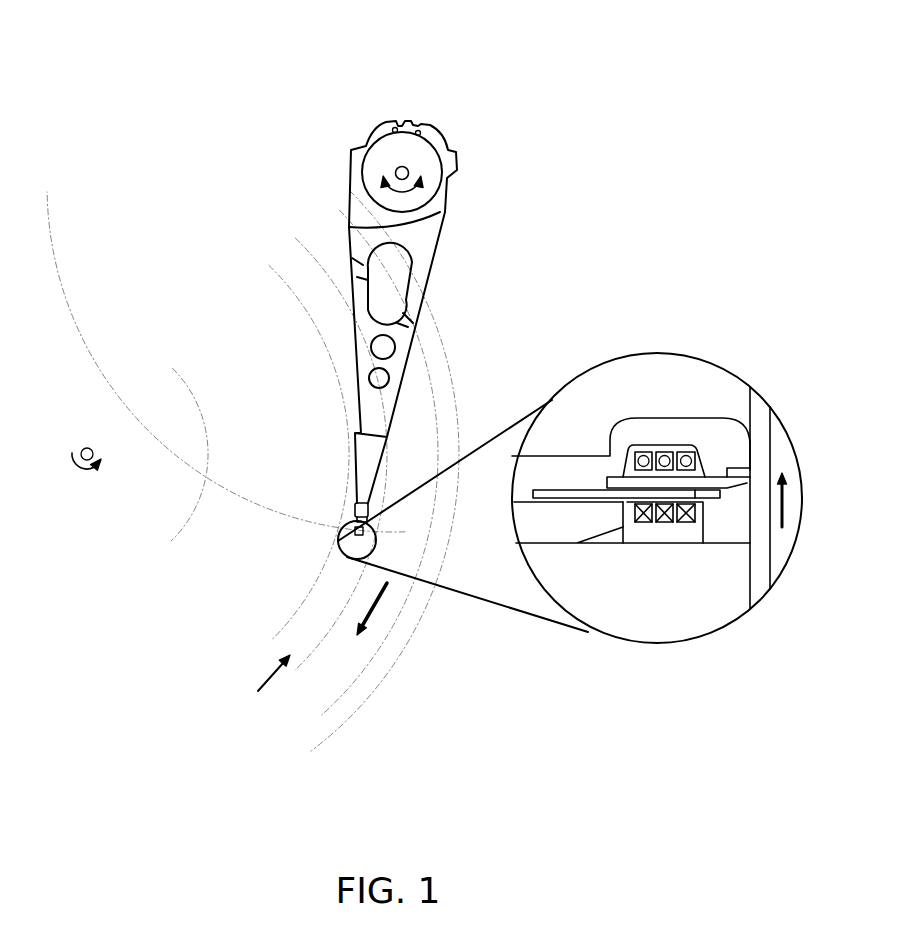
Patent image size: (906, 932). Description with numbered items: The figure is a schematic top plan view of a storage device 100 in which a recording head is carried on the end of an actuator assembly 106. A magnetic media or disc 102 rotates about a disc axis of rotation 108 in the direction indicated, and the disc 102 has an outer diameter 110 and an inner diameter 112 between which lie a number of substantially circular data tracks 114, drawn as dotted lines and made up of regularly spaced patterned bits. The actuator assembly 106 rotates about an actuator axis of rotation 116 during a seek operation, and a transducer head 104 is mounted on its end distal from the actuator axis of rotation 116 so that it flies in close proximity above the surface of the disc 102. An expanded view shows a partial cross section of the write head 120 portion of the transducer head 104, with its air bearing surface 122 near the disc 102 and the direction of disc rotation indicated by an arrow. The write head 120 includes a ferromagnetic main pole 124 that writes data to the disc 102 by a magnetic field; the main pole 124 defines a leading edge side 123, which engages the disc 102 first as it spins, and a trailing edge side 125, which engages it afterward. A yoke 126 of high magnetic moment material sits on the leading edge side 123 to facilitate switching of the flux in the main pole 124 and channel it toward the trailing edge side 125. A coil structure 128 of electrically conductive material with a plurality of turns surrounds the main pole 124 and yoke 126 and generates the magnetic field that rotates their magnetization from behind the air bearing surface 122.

The storage device 100 is at (118, 60).
The disc 102 is at (475, 328).
The transducer head 104 is at (338, 541).
The actuator assembly 106 is at (350, 160).
The disc axis of rotation 108 is at (86, 447).
The outer diameter 110 is at (332, 702).
The inner diameter 112 is at (175, 528).
The data tracks 114 is at (258, 691).
The actuator axis of rotation 116 is at (412, 173).
The write head 120 is at (657, 528).
The air bearing surface 122 is at (750, 520).
The leading edge side 123 is at (703, 493).
The main pole 124 is at (720, 490).
The trailing edge side 125 is at (612, 472).
The yoke 126 is at (622, 545).
The coil structure 128 is at (661, 438).